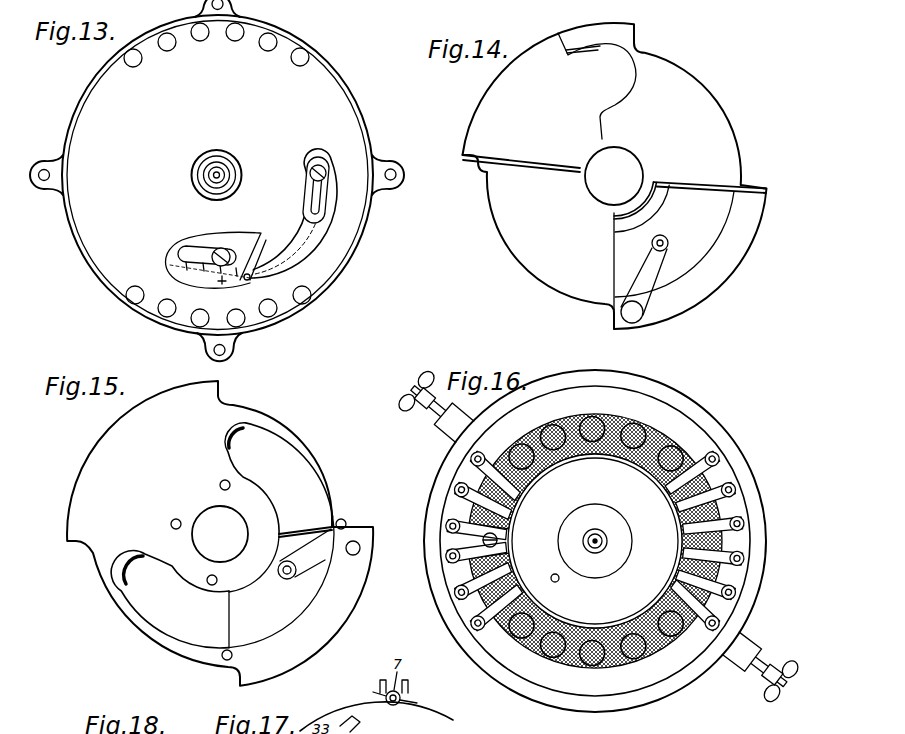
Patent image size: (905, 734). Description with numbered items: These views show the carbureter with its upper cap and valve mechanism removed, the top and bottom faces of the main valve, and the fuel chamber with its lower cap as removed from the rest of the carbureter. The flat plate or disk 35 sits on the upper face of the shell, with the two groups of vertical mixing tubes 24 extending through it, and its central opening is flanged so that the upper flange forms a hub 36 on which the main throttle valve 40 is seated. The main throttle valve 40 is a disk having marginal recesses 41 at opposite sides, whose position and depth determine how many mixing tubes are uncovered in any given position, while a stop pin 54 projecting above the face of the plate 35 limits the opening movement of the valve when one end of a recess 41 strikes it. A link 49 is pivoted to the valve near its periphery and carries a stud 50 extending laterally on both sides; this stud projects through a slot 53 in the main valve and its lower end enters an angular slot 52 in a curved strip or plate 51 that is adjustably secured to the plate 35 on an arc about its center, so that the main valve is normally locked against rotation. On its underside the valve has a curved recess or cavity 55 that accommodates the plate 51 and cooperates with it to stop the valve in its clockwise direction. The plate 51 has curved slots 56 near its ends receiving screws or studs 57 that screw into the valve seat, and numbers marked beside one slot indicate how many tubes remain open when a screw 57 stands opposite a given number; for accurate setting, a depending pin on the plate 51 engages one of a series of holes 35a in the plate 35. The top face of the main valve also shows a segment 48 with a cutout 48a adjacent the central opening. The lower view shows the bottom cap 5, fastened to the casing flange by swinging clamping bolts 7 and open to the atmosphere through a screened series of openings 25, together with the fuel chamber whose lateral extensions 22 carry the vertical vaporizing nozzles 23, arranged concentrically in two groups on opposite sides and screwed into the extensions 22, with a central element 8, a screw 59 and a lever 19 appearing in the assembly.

In FIG. 16, the bottom cap 5 is at (480, 656).
In FIG. 16, the swinging clamping bolts 7 is at (432, 424).
In FIG. 16, the dial plate 8 is at (594, 541).
In FIG. 13, the lever 19 is at (316, 157).
In FIG. 16, the extensions 22 is at (488, 497).
In FIG. 16, the vaporizing nozzles 23 is at (470, 622).
In FIG. 13, the mixing tubes 24 is at (198, 41).
In FIG. 16, the openings 25 is at (627, 412).
In FIG. 13, the plate or disk 35 is at (217, 175).
In FIG. 13, the holes 35a is at (224, 284).
In FIG. 13, the hub 36 is at (232, 159).
In FIG. 14, the main throttle valve 40 is at (639, 164).
In FIG. 15, the main throttle valve 40 is at (251, 561).
In FIG. 14, the marginal recesses 41 is at (715, 100).
In FIG. 15, the marginal recesses 41 is at (300, 431).
In FIG. 14, the shutter plate 48 is at (522, 146).
In FIG. 14, the cutout 48a is at (597, 86).
In FIG. 14, the link 49 is at (655, 287).
In FIG. 15, the link 49 is at (320, 566).
In FIG. 14, the stud 50 is at (667, 247).
In FIG. 15, the stud 50 is at (287, 579).
In FIG. 13, the curved strip or plate 51 is at (312, 246).
In FIG. 13, the angular slot 52 is at (260, 248).
In FIG. 14, the slot 53 is at (690, 255).
In FIG. 15, the slot 53 is at (281, 582).
In FIG. 13, the stop pin 54 is at (312, 55).
In FIG. 15, the curved recess or cavity 55 is at (222, 535).
In FIG. 13, the curved slots 56 is at (322, 193).
In FIG. 13, the screws or studs 57 is at (327, 173).
In FIG. 16, the screw 59 is at (498, 540).